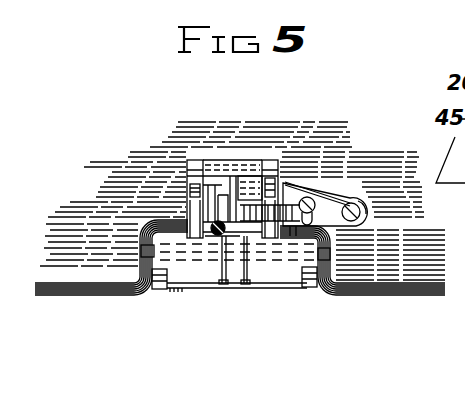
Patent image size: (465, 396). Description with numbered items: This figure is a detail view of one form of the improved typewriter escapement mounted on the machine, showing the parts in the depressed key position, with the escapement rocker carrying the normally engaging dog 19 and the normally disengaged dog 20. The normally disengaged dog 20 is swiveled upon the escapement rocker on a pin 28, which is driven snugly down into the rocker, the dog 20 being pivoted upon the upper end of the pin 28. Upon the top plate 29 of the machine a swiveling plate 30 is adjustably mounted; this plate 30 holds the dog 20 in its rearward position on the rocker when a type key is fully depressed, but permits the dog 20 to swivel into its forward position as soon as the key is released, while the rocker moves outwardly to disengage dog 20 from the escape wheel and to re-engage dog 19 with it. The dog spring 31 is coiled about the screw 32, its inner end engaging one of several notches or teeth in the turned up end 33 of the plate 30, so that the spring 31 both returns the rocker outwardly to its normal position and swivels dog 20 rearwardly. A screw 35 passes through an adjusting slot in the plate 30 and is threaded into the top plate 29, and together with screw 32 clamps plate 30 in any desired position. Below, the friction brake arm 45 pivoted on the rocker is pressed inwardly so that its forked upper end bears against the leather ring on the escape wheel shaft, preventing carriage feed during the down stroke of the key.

The normally engaging dog 19 is at (233, 230).
The normally disengaged dog 20 is at (212, 226).
The pin 28 is at (226, 233).
The top plate 29 is at (397, 262).
The swiveling plate 30 is at (335, 196).
The dog spring 31 is at (360, 205).
The screw 32 is at (368, 208).
The turned up end 33 is at (285, 180).
The screw 35 is at (322, 192).
The friction brake arm 45 is at (271, 288).